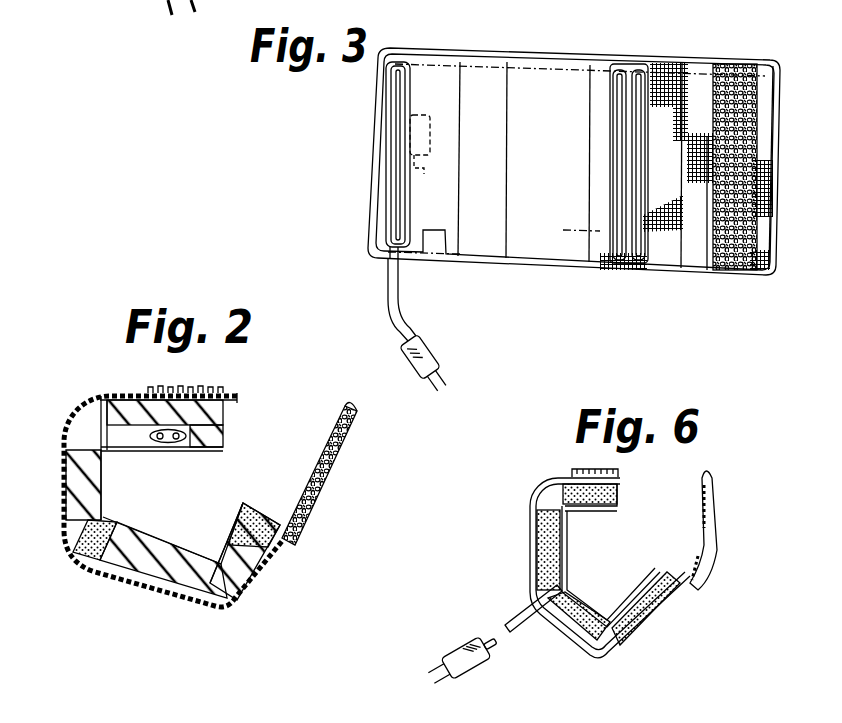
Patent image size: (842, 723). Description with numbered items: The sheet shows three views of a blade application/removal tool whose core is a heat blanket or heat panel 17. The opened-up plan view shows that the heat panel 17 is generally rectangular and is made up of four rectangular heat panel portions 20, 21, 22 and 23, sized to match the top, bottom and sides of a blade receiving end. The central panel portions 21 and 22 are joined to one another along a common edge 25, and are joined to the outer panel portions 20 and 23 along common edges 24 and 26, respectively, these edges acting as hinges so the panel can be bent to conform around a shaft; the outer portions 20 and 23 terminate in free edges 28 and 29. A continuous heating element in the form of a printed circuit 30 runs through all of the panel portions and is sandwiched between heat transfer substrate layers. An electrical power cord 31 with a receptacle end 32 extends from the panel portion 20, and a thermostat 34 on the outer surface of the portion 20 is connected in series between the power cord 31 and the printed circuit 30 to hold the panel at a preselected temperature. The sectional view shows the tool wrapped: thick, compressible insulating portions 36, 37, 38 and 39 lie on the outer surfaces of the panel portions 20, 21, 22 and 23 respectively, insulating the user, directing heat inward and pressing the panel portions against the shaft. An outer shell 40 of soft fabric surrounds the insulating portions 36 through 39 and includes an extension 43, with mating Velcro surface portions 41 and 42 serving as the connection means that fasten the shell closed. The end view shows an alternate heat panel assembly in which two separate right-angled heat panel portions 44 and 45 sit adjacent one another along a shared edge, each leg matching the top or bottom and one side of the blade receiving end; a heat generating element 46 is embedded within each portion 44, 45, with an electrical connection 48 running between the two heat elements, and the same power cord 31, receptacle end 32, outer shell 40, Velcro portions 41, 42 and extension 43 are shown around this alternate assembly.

In FIG. 3, the heat panel 17 is at (527, 100).
In FIG. 2, the heat panel 17 is at (290, 540).
In FIG. 3, the heat panel portion 20 is at (430, 90).
In FIG. 2, the heat panel portion 20 is at (150, 450).
In FIG. 3, the heat panel portion 21 is at (488, 238).
In FIG. 2, the heat panel portion 21 is at (103, 508).
In FIG. 3, the heat panel portion 22 is at (565, 248).
In FIG. 2, the heat panel portion 22 is at (222, 538).
In FIG. 3, the heat panel portion 23 is at (610, 273).
In FIG. 2, the heat panel portion 23 is at (247, 507).
In FIG. 3, the common edge 24 is at (462, 72).
In FIG. 2, the common edge 24 is at (103, 393).
In FIG. 3, the common edge 25 is at (517, 77).
In FIG. 2, the common edge 25 is at (97, 567).
In FIG. 3, the common edge 26 is at (593, 82).
In FIG. 2, the common edge 26 is at (180, 600).
In FIG. 3, the free edge 28 is at (380, 82).
In FIG. 2, the free edge 28 is at (210, 449).
In FIG. 3, the free edge 29 is at (650, 82).
In FIG. 2, the free edge 29 is at (250, 503).
In FIG. 3, the printed circuit 30 is at (407, 167).
In FIG. 3, the electrical power cord 31 is at (388, 290).
In FIG. 2, the electrical power cord 31 is at (190, 393).
In FIG. 6, the electrical power cord 31 is at (517, 615).
In FIG. 3, the receptacle end 32 is at (438, 360).
In FIG. 6, the receptacle end 32 is at (463, 643).
In FIG. 3, the thermostat 34 is at (413, 117).
In FIG. 2, the thermostat 34 is at (217, 397).
In FIG. 2, the insulating portion 36 is at (220, 412).
In FIG. 2, the insulating portion 37 is at (67, 473).
In FIG. 2, the insulating portion 38 is at (120, 560).
In FIG. 2, the insulating portion 39 is at (270, 560).
In FIG. 3, the outer shell 40 is at (530, 266).
In FIG. 2, the outer shell 40 is at (87, 393).
In FIG. 6, the outer shell 40 is at (530, 535).
In FIG. 2, the Velcro surface portion 41 is at (193, 387).
In FIG. 6, the Velcro surface portion 41 is at (585, 468).
In FIG. 3, the Velcro surface portion 42 is at (723, 277).
In FIG. 2, the Velcro surface portion 42 is at (333, 440).
In FIG. 6, the Velcro surface portion 42 is at (700, 498).
In FIG. 3, the extension 43 is at (777, 107).
In FIG. 2, the extension 43 is at (300, 490).
In FIG. 6, the extension 43 is at (716, 545).
In FIG. 6, the heat panel portion 44 is at (618, 515).
In FIG. 6, the heat panel portion 45 is at (665, 562).
In FIG. 6, the heat generating element 46 is at (565, 543).
In FIG. 6, the electrical connection 48 is at (540, 607).